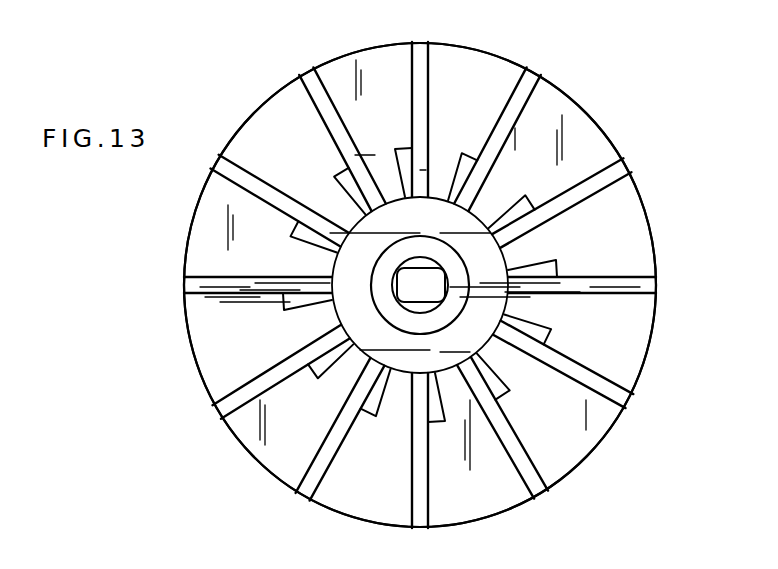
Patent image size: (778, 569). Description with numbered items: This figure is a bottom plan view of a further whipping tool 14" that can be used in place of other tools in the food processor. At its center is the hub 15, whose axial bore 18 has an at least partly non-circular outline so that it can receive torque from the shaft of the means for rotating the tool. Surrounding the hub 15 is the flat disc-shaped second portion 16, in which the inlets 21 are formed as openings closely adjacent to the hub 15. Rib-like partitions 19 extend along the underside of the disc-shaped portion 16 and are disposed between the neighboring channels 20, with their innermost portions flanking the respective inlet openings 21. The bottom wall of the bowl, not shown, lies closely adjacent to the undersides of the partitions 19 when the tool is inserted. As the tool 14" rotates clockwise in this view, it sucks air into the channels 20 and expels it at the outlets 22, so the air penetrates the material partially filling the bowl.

The whipping tool 14 is at (182, 364).
The hub 15 is at (432, 307).
The flat disc-shaped second portion 16 is at (656, 330).
The axial bore 18 is at (404, 300).
The rib-like partitions 19 is at (307, 90).
The channels 20 is at (212, 259).
The inlets 21 is at (392, 153).
The outlets 22 is at (500, 51).